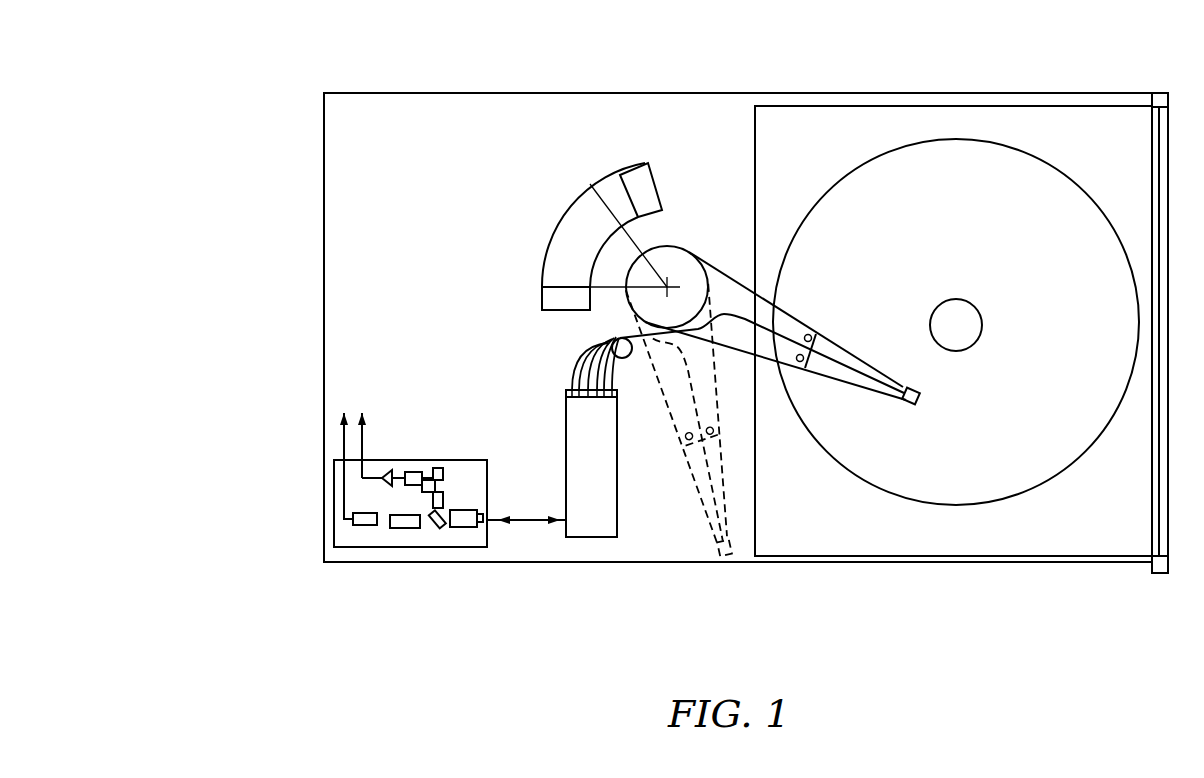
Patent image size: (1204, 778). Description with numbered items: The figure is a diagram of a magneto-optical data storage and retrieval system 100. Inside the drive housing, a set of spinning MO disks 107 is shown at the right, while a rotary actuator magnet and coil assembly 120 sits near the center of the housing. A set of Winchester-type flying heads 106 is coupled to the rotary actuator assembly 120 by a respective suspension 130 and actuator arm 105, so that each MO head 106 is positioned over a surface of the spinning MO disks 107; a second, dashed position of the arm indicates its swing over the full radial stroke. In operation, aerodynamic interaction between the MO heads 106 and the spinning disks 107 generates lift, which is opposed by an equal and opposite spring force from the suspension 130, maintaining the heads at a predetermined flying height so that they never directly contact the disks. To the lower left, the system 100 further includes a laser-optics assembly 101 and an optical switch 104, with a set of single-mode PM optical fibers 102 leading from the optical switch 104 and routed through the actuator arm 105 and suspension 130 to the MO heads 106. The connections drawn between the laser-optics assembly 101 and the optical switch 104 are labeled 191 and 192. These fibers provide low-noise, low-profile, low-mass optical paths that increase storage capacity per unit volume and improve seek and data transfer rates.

The magneto-optical data storage and retrieval system 100 is at (895, 52).
The laser-optics assembly 101 is at (382, 542).
The single-mode PM optical fibers 102 is at (572, 363).
The optical switch 104 is at (628, 522).
The actuator arm 105 is at (788, 312).
The flying heads 106 is at (922, 404).
The spinning MO disks 107 is at (970, 139).
The rotary actuator magnet and coil assembly 120 is at (590, 184).
The suspension 130 is at (850, 349).
The signal line 191 is at (508, 530).
The signal line 192 is at (548, 530).